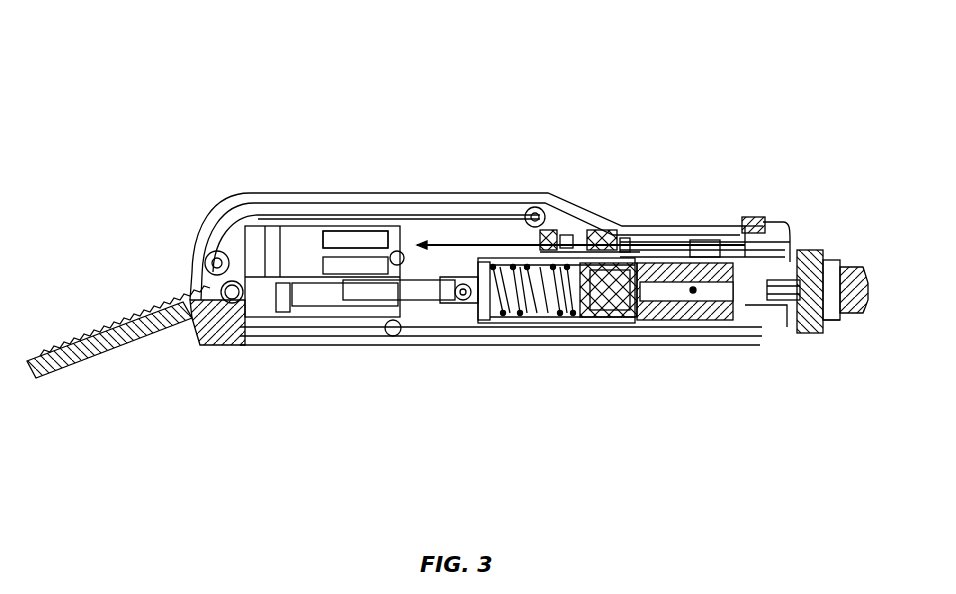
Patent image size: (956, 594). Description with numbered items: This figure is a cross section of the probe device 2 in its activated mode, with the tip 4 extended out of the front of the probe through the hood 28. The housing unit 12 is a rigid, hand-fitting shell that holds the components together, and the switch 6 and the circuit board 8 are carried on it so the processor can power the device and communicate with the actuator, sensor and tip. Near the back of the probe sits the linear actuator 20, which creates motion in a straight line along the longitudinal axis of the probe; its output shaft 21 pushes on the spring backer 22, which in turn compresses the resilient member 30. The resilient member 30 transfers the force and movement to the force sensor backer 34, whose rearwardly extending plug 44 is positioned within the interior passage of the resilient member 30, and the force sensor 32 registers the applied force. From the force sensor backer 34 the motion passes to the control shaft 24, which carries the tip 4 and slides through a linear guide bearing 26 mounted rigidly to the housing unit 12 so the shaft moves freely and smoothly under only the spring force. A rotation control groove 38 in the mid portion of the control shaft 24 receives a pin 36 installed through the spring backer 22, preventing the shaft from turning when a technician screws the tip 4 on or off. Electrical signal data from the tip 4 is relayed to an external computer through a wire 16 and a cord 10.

The probe device 2 is at (456, 259).
The tip 4 is at (850, 278).
The switch 6 is at (745, 218).
The circuit board 8 is at (708, 237).
The cord 10 is at (105, 365).
The housing unit 12 is at (383, 193).
The wire 16 is at (480, 250).
The linear actuator 20 is at (290, 257).
The output shaft 21 is at (432, 300).
The spring backer 22 is at (546, 322).
The control shaft 24 is at (638, 225).
The linear guide bearing 26 is at (790, 275).
The hood 28 is at (848, 300).
The resilient member 30 is at (524, 318).
The force sensor 32 is at (640, 255).
The force sensor backer 34 is at (600, 335).
The pin 36 is at (702, 322).
The rotation control groove 38 is at (700, 291).
The plug 44 is at (594, 340).